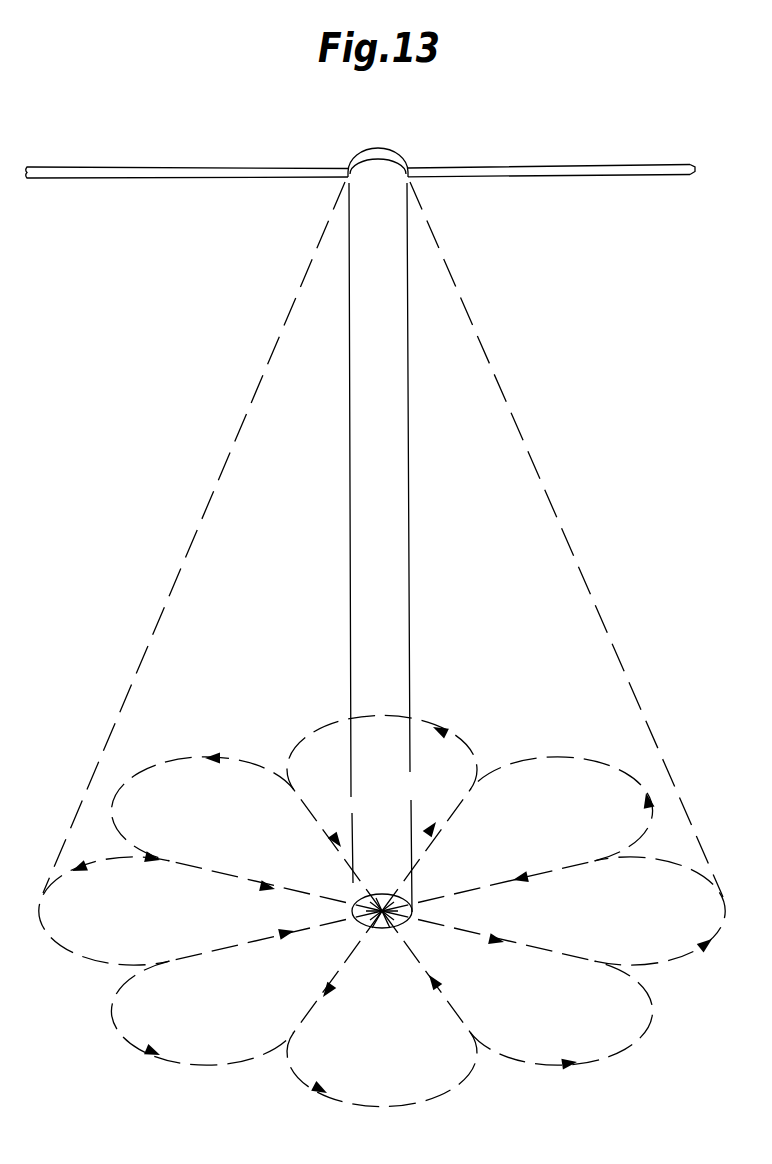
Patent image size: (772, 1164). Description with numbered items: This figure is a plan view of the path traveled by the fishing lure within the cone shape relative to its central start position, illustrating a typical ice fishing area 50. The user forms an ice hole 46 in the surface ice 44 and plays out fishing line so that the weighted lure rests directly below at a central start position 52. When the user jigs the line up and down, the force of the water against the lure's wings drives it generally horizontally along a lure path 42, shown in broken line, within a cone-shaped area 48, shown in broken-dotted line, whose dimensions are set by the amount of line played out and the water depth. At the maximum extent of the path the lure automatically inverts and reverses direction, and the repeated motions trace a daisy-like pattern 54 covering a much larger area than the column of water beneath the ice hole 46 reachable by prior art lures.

The lure path 42 is at (420, 718).
The surface ice 44 is at (612, 166).
The ice hole 46 is at (402, 153).
The cone-shaped area 48 is at (228, 456).
The ice fishing area 50 is at (414, 506).
The central start position 52 is at (378, 912).
The daisy-like pattern 54 is at (210, 754).